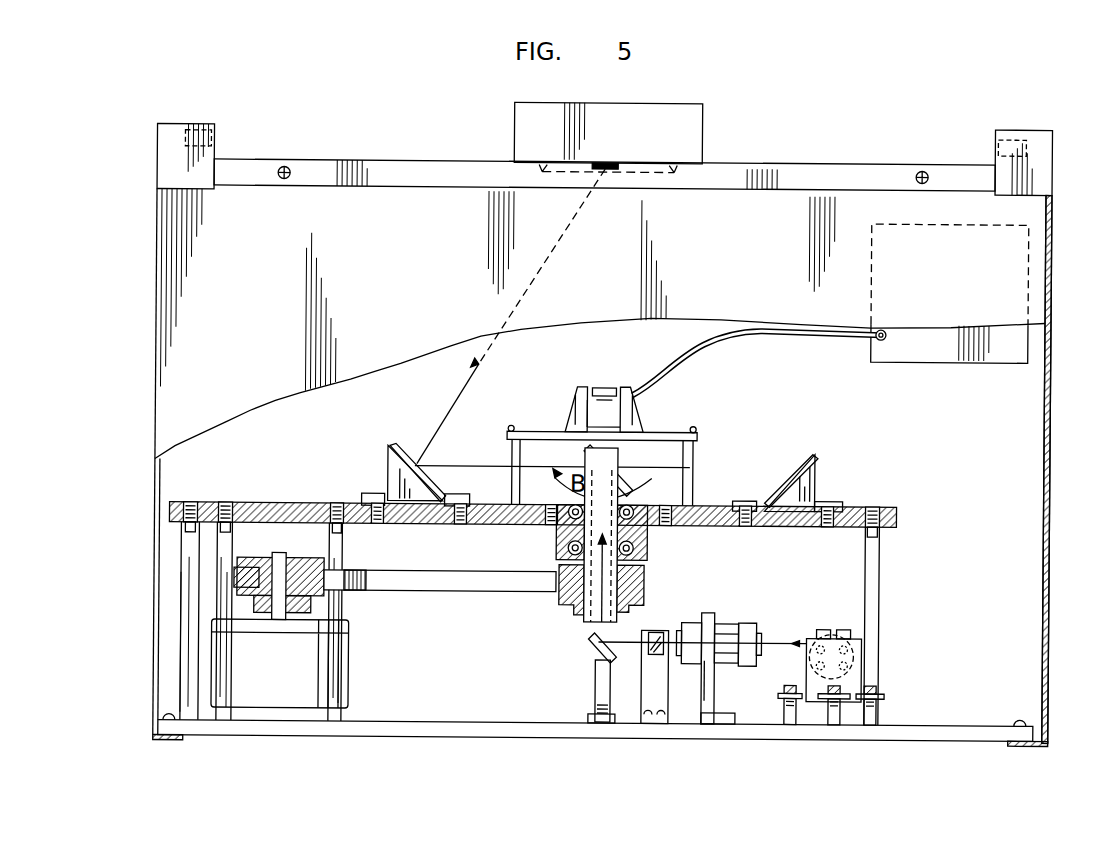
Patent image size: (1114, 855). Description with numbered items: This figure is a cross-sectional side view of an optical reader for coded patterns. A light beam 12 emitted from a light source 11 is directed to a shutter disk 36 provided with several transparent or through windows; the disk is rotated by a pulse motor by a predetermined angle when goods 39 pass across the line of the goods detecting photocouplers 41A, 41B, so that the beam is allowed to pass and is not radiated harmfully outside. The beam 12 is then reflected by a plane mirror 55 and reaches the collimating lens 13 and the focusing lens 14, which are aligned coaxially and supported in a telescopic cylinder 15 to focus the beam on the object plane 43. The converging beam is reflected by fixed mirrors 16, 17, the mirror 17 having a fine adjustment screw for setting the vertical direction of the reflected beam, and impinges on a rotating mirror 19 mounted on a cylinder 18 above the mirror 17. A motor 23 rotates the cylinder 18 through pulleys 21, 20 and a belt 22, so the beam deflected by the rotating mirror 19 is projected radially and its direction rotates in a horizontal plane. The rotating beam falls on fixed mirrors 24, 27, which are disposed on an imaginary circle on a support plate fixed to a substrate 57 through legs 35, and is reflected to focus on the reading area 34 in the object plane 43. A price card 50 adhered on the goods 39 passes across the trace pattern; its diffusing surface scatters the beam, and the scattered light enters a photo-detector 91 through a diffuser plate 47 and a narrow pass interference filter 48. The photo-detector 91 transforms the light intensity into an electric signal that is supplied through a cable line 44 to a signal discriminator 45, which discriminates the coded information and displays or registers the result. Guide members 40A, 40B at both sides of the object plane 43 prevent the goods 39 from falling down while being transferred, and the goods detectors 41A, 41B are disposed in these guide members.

The light source 11 is at (851, 651).
The light beam 12 is at (803, 640).
The collimating lens 13 is at (757, 630).
The focusing lens 14 is at (690, 622).
The telescopic cylinder 15 is at (726, 623).
The fixed mirror 16 is at (655, 632).
The fixed mirror 17 is at (587, 640).
The cylinder 18 is at (645, 532).
The rotating mirror 19 is at (612, 474).
The pulley 20 is at (606, 545).
The pulley 21 is at (305, 565).
The belt 22 is at (467, 582).
The motor 23 is at (350, 668).
The fixed mirror 24 is at (815, 485).
The fixed mirror 27 is at (905, 512).
The reading area 34 is at (672, 172).
The legs 35 is at (880, 593).
The shutter disk 36 is at (828, 637).
The goods 39 is at (700, 133).
The guide member 40A is at (1019, 159).
The guide member 40B is at (220, 136).
The goods detecting photocoupler 41A is at (993, 144).
The goods detecting photocoupler 41B is at (217, 136).
The object plane 43 is at (419, 172).
The cable line 44 is at (796, 339).
The signal discriminator 45 is at (970, 362).
The diffuser plate 47 is at (602, 373).
The narrow pass interference filter 48 is at (606, 388).
The price card 50 is at (607, 170).
The plane mirror 55 is at (845, 630).
The substrate 57 is at (930, 736).
The photo-detector 91 is at (623, 389).